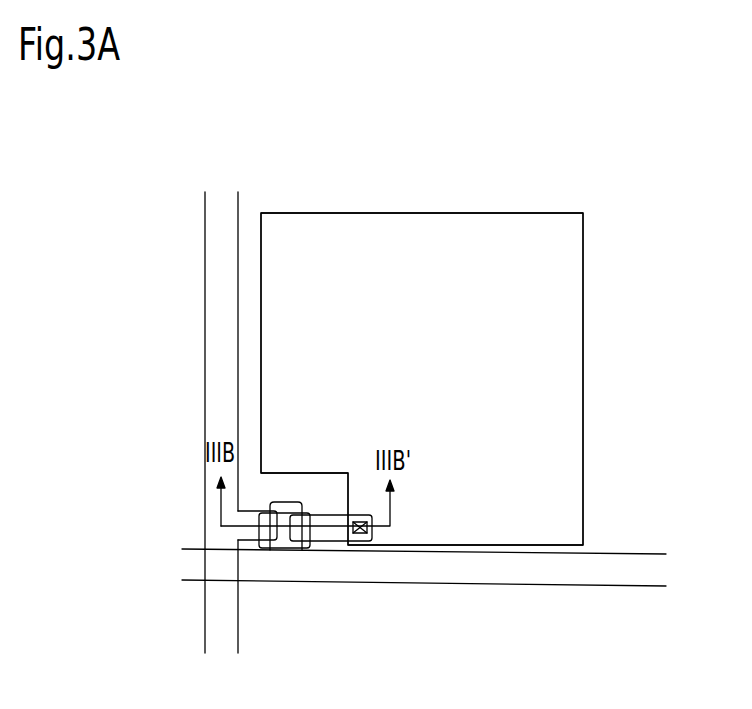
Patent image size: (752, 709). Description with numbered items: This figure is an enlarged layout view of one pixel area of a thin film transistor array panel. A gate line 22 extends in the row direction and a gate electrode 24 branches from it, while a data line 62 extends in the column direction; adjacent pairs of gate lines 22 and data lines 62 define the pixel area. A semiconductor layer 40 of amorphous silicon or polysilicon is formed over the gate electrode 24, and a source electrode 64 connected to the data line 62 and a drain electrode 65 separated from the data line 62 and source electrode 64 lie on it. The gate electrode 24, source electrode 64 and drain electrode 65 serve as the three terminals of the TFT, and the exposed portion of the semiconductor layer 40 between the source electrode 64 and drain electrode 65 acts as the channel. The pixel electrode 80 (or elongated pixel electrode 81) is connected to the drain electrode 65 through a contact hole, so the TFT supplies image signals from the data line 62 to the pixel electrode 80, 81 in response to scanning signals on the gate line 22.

The gate line 22 is at (510, 587).
The gate electrode 24 is at (287, 503).
The semiconductor layer 40 is at (283, 548).
The data line 62 is at (205, 388).
The source electrode 64 is at (255, 545).
The drain electrode 65 is at (328, 547).
The pixel electrode 80 is at (583, 395).
The pixel electrode 81 is at (422, 379).